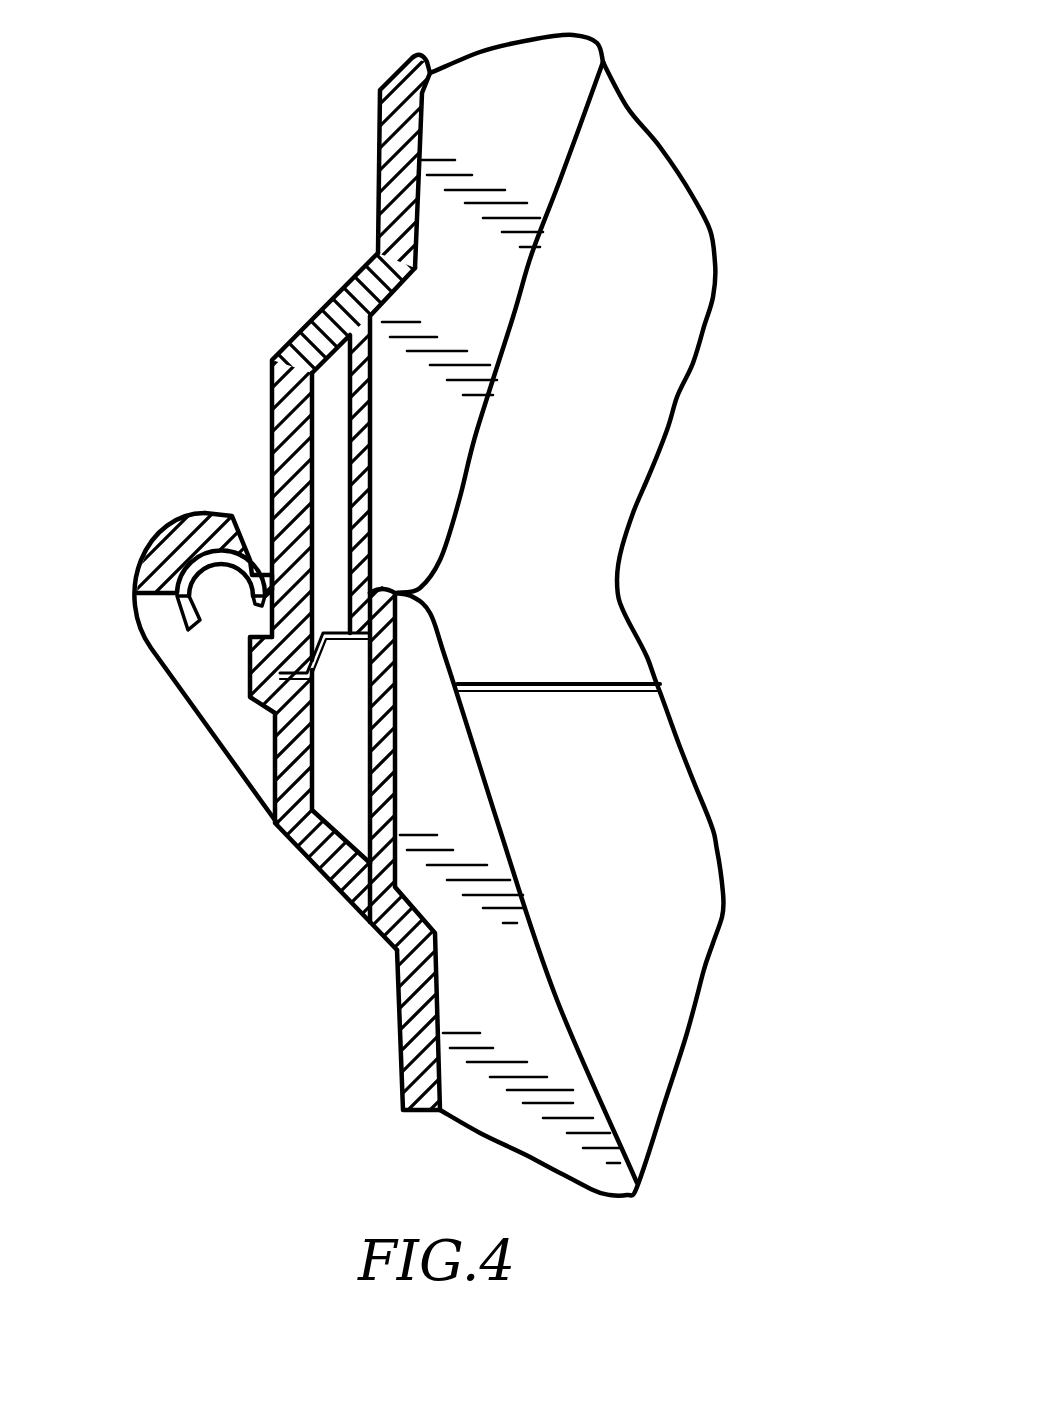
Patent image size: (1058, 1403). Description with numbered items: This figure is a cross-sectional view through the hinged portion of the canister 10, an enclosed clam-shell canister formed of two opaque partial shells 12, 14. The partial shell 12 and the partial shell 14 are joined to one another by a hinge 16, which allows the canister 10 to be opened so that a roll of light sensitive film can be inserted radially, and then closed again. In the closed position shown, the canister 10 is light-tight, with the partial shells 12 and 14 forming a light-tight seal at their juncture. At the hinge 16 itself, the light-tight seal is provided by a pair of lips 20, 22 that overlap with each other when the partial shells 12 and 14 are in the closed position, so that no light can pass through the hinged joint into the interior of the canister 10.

The canister 10 is at (757, 138).
The partial shell 12 is at (387, 83).
The partial shell 14 is at (397, 1007).
The hinge 16 is at (188, 613).
The lip 20 is at (347, 430).
The lip 22 is at (367, 760).